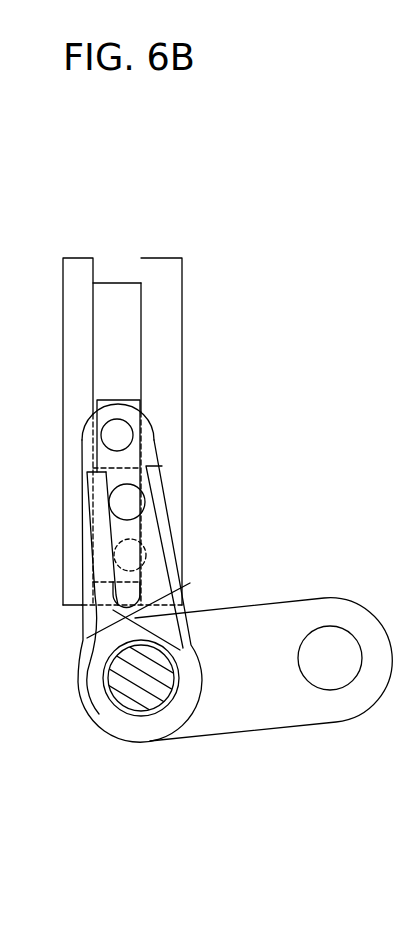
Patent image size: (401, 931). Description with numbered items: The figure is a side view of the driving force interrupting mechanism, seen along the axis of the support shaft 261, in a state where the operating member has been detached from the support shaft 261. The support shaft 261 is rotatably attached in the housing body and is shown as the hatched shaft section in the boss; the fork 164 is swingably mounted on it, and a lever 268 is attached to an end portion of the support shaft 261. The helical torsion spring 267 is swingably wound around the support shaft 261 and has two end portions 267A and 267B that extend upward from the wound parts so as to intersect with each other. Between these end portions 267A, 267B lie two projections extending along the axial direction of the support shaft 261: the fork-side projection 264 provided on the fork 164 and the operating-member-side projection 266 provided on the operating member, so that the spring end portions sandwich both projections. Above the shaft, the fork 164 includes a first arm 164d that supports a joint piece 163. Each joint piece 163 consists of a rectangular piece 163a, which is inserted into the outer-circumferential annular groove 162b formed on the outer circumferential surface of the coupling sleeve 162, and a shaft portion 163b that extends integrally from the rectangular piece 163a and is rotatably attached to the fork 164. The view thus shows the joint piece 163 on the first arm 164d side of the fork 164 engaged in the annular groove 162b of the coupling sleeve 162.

The coupling sleeve 162 is at (161, 259).
The outer-circumferential annular groove 162b is at (117, 282).
The joint piece 163 is at (102, 396).
The rectangular piece 163a is at (122, 431).
The shaft portion 163b is at (148, 444).
The fork 164 is at (83, 622).
The first arm 164d is at (158, 437).
The fork-side projection 264 is at (127, 500).
The operating-member-side projection 266 is at (147, 566).
The helical torsion spring 267 is at (192, 717).
The end portion of helical torsion spring 267A is at (157, 528).
The end portion of helical torsion spring 267B is at (100, 532).
The support shaft 261 is at (135, 690).
The lever 268 is at (312, 712).